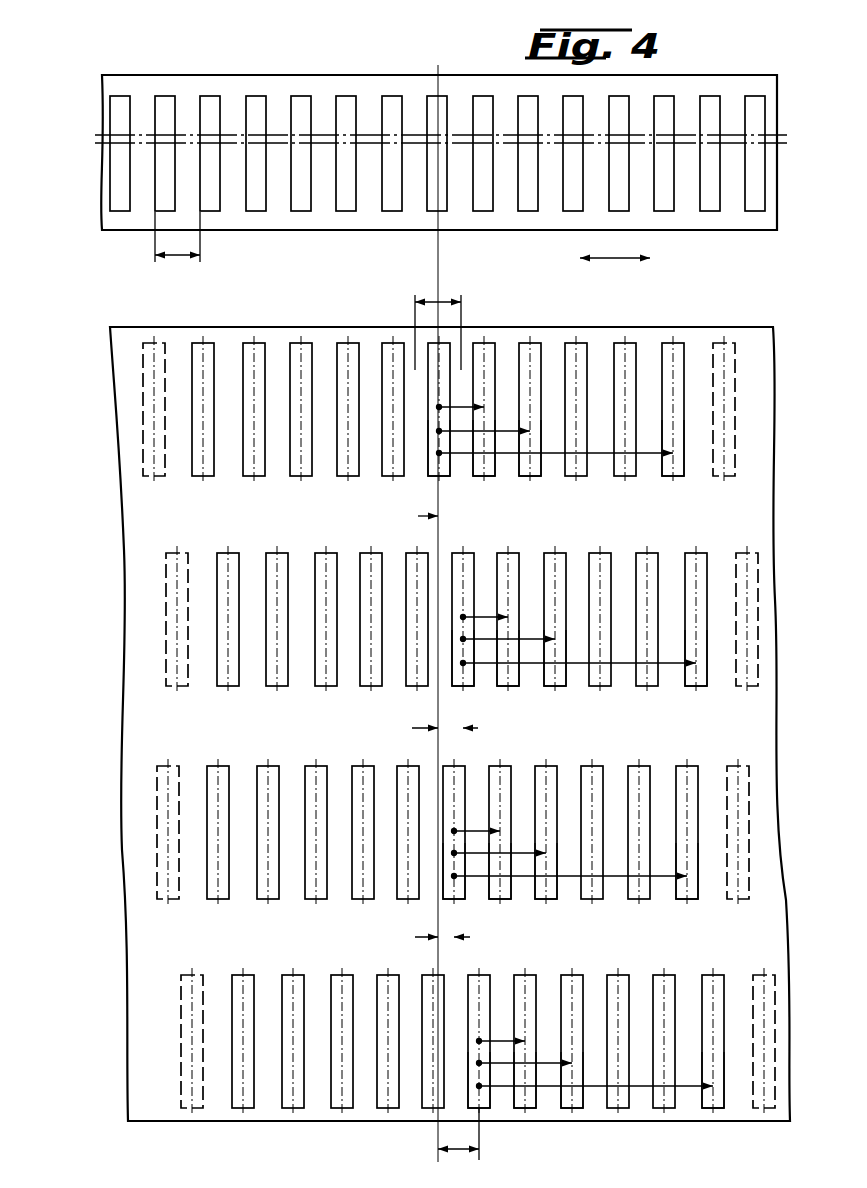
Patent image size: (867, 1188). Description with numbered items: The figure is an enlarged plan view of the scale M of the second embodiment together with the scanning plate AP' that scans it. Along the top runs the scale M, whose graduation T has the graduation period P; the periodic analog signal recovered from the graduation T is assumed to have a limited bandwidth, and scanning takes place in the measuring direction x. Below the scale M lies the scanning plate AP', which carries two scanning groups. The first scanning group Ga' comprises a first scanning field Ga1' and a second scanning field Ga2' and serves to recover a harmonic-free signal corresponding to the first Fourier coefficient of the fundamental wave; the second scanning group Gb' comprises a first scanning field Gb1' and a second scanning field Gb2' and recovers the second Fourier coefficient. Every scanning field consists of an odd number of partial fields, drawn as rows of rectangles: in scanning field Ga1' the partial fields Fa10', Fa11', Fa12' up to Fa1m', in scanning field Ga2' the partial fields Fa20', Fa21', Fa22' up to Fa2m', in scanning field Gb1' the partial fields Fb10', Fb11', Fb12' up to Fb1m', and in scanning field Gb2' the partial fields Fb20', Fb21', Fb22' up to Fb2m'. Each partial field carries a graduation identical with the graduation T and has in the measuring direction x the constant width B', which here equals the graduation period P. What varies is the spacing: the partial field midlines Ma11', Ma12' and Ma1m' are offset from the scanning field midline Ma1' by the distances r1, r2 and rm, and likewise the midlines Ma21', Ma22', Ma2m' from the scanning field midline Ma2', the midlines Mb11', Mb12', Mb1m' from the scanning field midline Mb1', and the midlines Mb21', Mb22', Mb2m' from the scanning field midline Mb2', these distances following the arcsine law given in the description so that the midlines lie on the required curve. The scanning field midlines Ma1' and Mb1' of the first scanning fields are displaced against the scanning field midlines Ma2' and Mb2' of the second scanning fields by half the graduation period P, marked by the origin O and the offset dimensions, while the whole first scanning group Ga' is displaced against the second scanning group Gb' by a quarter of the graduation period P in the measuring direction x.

The scale M is at (708, 222).
The graduation T is at (755, 200).
The graduation period P is at (172, 258).
The measuring direction x is at (607, 260).
The scanning plate AP' is at (450, 702).
The constant width of partial fields B' is at (432, 316).
The origin / zero offset O is at (426, 516).
The distance of first partial field midline r1 is at (498, 1041).
The distance of second partial field midline r2 is at (546, 1063).
The distance of m-th partial field midline rm is at (686, 1086).
The first scanning group Ga' is at (814, 515).
The second scanning group Gb' is at (817, 940).
The first scanning field of first scanning group Ga1' is at (398, 409).
The second scanning field of first scanning group Ga2' is at (410, 619).
The first scanning field of second scanning group Gb1' is at (406, 832).
The second scanning field of second scanning group Gb2' is at (420, 1041).
The scanning field midline of first scanning field Ga1' Ma1' is at (460, 370).
The partial field midline Ma11' is at (499, 390).
The partial field midline Ma12' is at (555, 390).
The partial field midline Ma1m' is at (698, 390).
The partial field Fa10' is at (461, 469).
The partial field Fa11' is at (516, 469).
The partial field Fa12' is at (572, 469).
The partial field Fa1m' is at (701, 469).
The scanning field midline of second scanning field Ga2' Ma2' is at (480, 607).
The partial field midline Ma21' is at (530, 607).
The partial field midline Ma22' is at (585, 607).
The partial field midline Ma2m' is at (719, 607).
The partial field Fa20' is at (484, 681).
The partial field Fa21' is at (538, 681).
The partial field Fa22' is at (595, 681).
The partial field Fa2m' is at (725, 681).
The scanning field midline of first scanning field Gb1' Mb1' is at (473, 821).
The partial field midline Mb11' is at (522, 821).
The partial field midline Mb12' is at (578, 821).
The partial field midline Mb1m' is at (721, 821).
The partial field Fb10' is at (475, 892).
The partial field Fb11' is at (529, 892).
The partial field Fb12' is at (583, 892).
The partial field Fb1m' is at (718, 892).
The scanning field midline of second scanning field Gb2' Mb2' is at (498, 1032).
The partial field midline Mb21' is at (549, 1032).
The partial field midline Mb22' is at (606, 1032).
The partial field midline Mb2m' is at (712, 1032).
The partial field Fb20' is at (500, 1107).
The partial field Fb21' is at (549, 1107).
The partial field Fb22' is at (605, 1107).
The partial field Fb2m' is at (720, 1107).